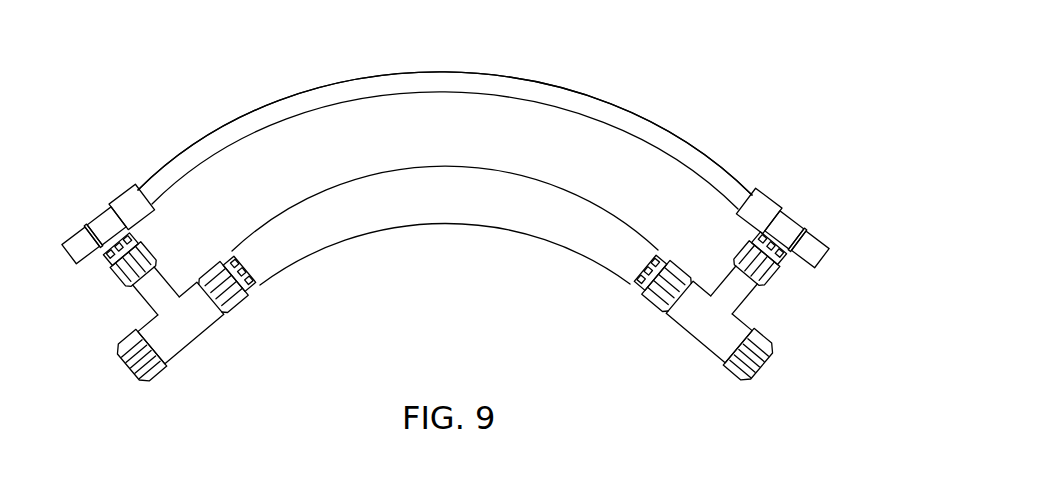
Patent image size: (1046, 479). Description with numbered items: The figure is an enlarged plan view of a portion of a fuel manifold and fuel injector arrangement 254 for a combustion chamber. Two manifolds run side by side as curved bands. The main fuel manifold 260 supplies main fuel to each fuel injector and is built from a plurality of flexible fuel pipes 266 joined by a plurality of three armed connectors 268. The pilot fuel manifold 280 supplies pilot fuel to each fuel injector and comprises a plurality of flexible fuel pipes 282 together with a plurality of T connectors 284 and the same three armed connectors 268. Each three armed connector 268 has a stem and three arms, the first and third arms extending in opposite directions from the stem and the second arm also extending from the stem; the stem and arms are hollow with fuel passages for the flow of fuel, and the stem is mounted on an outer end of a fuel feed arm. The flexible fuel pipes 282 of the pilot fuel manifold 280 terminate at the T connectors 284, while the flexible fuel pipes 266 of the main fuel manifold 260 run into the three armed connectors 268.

The fuel manifold and fuel injector arrangement 254 is at (756, 100).
The main fuel manifold 260 is at (738, 316).
The flexible fuel pipes 266 is at (607, 215).
The three armed connectors 268 is at (459, 288).
The pilot fuel manifold 280 is at (733, 175).
The flexible fuel pipes 282 is at (610, 72).
The T connectors 284 is at (105, 222).